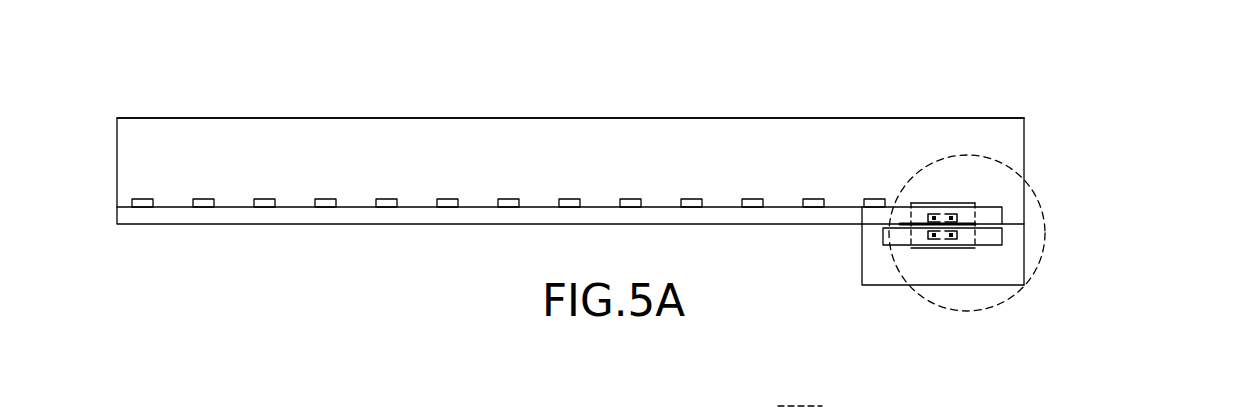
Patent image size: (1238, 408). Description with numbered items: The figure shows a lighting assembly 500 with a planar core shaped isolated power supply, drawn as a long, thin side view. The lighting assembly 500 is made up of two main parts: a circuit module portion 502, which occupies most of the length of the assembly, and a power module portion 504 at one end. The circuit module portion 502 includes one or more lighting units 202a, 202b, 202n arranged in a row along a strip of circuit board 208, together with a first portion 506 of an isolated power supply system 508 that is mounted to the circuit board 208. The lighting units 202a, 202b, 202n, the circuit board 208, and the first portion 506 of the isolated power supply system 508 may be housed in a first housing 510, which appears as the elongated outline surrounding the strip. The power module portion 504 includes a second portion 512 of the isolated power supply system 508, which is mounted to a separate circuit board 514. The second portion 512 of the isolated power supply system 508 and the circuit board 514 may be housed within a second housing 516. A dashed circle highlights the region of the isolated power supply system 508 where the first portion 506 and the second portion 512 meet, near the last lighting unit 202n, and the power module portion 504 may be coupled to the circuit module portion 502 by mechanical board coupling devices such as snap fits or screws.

The lighting assembly 500 is at (1078, 138).
The circuit module portion 502 is at (1068, 171).
The power module portion 504 is at (1073, 238).
The first portion of the isolated power supply system 506 is at (947, 172).
The isolated power supply system 508 is at (981, 156).
The first housing 510 is at (117, 118).
The second portion of the isolated power supply system 512 is at (936, 276).
The circuit board 514 is at (990, 241).
The second housing 516 is at (1025, 265).
The lighting unit 202a is at (135, 207).
The lighting unit 202b is at (196, 207).
The lighting unit 202n is at (872, 207).
The circuit board 208 is at (350, 216).